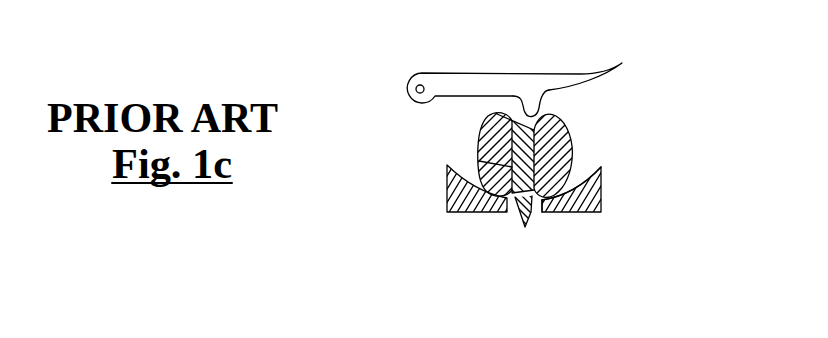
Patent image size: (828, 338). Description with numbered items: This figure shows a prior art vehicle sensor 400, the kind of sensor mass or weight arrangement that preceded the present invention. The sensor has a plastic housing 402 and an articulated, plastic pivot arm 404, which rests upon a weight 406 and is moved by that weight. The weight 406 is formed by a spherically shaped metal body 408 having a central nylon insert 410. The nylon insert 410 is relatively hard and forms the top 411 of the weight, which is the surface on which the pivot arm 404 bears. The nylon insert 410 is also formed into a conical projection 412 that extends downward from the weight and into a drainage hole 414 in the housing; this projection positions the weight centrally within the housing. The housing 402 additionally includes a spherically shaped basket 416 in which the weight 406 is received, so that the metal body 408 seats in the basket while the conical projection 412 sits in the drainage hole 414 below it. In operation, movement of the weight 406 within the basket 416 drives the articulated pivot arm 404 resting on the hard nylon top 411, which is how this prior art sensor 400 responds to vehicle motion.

The vehicle sensor 400 is at (415, 45).
The plastic housing 402 is at (602, 193).
The articulated plastic pivot arm 404 is at (626, 70).
The weight 406 is at (529, 148).
The spherically shaped metal body 408 is at (477, 137).
The central nylon insert 410 is at (479, 161).
The top of the weight 411 is at (539, 115).
The conical projection 412 is at (526, 227).
The drainage hole 414 is at (537, 209).
The spherically shaped basket 416 is at (584, 171).